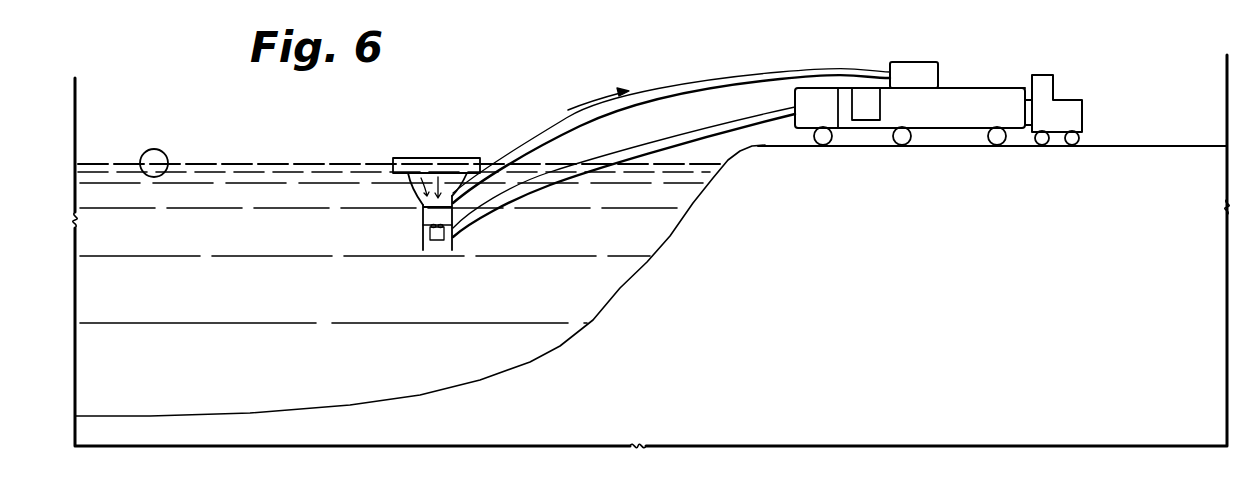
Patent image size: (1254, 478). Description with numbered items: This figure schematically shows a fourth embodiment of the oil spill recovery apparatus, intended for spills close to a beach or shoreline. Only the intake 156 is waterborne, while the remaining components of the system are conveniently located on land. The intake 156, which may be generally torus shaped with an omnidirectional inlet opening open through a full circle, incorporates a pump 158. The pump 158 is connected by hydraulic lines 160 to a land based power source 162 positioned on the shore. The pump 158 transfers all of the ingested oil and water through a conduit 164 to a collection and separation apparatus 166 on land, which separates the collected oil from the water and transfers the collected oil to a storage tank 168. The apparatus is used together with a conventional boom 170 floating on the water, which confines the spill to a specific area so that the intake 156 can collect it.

The intake 156 is at (412, 150).
The pump 158 is at (432, 242).
The hydraulic lines 160 is at (620, 166).
The land based power source 162 is at (812, 122).
The conduit 164 is at (697, 80).
The collection and separation apparatus 166 is at (914, 57).
The storage tank 168 is at (972, 95).
The boom 170 is at (163, 153).